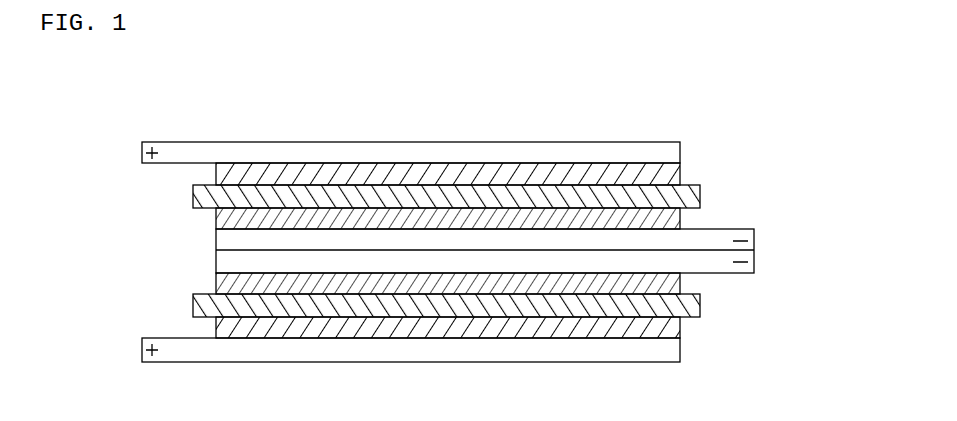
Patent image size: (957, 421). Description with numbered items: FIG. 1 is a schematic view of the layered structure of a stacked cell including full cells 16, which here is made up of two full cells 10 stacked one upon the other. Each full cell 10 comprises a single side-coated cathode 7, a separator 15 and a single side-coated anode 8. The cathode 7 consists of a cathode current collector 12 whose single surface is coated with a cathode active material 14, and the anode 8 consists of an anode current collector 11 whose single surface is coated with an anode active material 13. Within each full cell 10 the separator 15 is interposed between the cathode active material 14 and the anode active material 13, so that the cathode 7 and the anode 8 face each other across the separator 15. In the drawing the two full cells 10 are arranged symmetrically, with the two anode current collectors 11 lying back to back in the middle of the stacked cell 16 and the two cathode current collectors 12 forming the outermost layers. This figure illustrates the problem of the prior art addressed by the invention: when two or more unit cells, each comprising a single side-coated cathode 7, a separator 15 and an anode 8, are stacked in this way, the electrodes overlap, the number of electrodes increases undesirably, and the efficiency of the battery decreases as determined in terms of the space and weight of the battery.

The cathode 7 is at (746, 95).
The anode 8 is at (815, 197).
The full cell 10 is at (126, 362).
The anode current collector 11 is at (757, 242).
The cathode current collector 12 is at (683, 143).
The anode active material 13 is at (683, 214).
The cathode active material 14 is at (678, 173).
The separator 15 is at (193, 195).
The stacked cell including full cells 16 is at (800, 164).